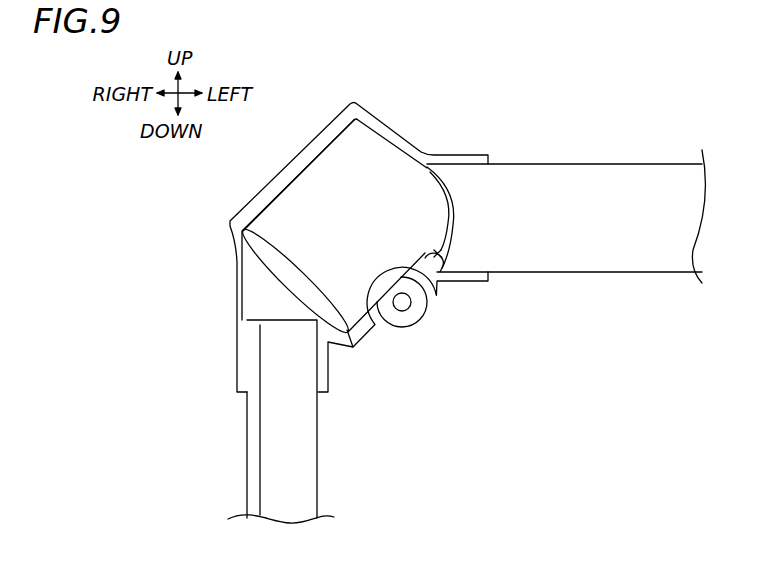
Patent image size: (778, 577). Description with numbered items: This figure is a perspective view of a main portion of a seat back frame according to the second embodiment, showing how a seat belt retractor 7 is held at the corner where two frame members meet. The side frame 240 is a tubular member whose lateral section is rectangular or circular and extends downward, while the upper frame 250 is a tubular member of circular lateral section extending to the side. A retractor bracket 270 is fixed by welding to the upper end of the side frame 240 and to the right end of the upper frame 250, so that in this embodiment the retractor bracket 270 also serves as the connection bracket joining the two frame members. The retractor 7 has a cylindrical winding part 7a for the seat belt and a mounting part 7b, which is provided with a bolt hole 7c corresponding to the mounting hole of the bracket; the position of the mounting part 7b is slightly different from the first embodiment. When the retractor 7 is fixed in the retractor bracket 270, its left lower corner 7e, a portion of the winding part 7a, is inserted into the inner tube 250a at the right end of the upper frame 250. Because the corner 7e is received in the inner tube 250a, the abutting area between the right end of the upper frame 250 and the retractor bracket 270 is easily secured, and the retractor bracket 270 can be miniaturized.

The retractor 7 is at (356, 243).
The winding part 7a is at (280, 192).
The mounting part 7b is at (412, 312).
The bolt hole 7c is at (402, 305).
The left lower corner 7e is at (458, 214).
The side frame 240 is at (318, 448).
The upper frame 250 is at (565, 221).
The inner tube 250a is at (440, 254).
The retractor bracket 270 is at (389, 122).